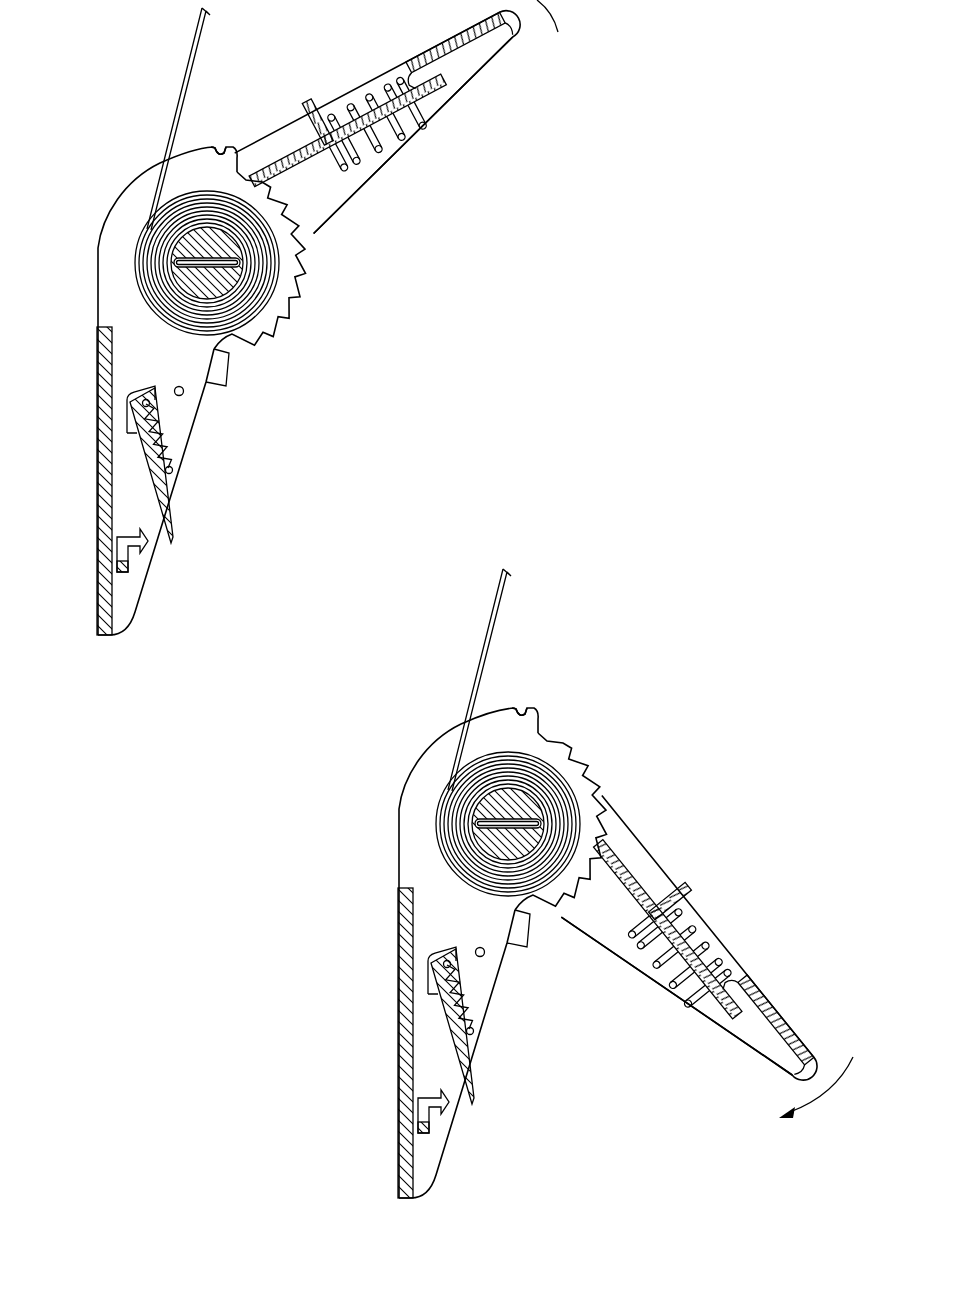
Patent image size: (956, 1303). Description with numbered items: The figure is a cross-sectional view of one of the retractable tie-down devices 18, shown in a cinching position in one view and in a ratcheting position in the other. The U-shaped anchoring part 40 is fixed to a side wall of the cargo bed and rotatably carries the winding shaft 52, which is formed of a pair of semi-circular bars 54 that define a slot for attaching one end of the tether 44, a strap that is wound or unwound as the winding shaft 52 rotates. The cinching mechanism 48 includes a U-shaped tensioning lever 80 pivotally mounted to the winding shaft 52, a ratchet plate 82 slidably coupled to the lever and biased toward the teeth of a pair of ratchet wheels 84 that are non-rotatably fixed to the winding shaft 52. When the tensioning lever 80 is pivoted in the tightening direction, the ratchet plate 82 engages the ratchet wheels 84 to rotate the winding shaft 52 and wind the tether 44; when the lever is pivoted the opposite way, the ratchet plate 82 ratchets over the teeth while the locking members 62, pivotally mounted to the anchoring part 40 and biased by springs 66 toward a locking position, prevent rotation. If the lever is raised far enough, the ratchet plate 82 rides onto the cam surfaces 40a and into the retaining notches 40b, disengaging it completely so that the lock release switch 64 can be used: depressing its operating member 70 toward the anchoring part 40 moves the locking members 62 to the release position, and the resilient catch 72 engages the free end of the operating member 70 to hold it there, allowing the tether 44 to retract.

In FIG. 9, the tie-down device 18 is at (80, 83).
In FIG. 10, the tie-down device 18 is at (587, 924).
In FIG. 9, the anchoring part 40 is at (97, 399).
In FIG. 10, the anchoring part 40 is at (430, 953).
In FIG. 9, the cam surfaces 40a is at (240, 160).
In FIG. 10, the cam surfaces 40a is at (561, 776).
In FIG. 9, the retaining notches 40b is at (223, 150).
In FIG. 10, the retaining notches 40b is at (522, 682).
In FIG. 9, the tether 44 is at (188, 58).
In FIG. 10, the tether 44 is at (465, 680).
In FIG. 9, the cinching mechanism 48 is at (397, 134).
In FIG. 10, the cinching mechanism 48 is at (670, 965).
In FIG. 9, the winding shaft 52 is at (196, 293).
In FIG. 10, the winding shaft 52 is at (470, 824).
In FIG. 9, the semi-circular bars 54 is at (205, 277).
In FIG. 10, the semi-circular bars 54 is at (450, 824).
In FIG. 9, the locking members 62 is at (217, 382).
In FIG. 10, the locking members 62 is at (546, 945).
In FIG. 9, the lock release switch 64 is at (202, 479).
In FIG. 10, the lock release switch 64 is at (506, 1042).
In FIG. 9, the springs 66 is at (163, 433).
In FIG. 10, the springs 66 is at (500, 998).
In FIG. 9, the operating member 70 is at (163, 488).
In FIG. 10, the operating member 70 is at (486, 1025).
In FIG. 9, the catch 72 is at (130, 552).
In FIG. 10, the catch 72 is at (477, 1111).
In FIG. 9, the tensioning lever 80 is at (383, 150).
In FIG. 10, the tensioning lever 80 is at (734, 1023).
In FIG. 9, the ratchet plate 82 is at (305, 165).
In FIG. 10, the ratchet plate 82 is at (670, 927).
In FIG. 9, the ratchet wheels 84 is at (300, 190).
In FIG. 10, the ratchet wheels 84 is at (676, 996).